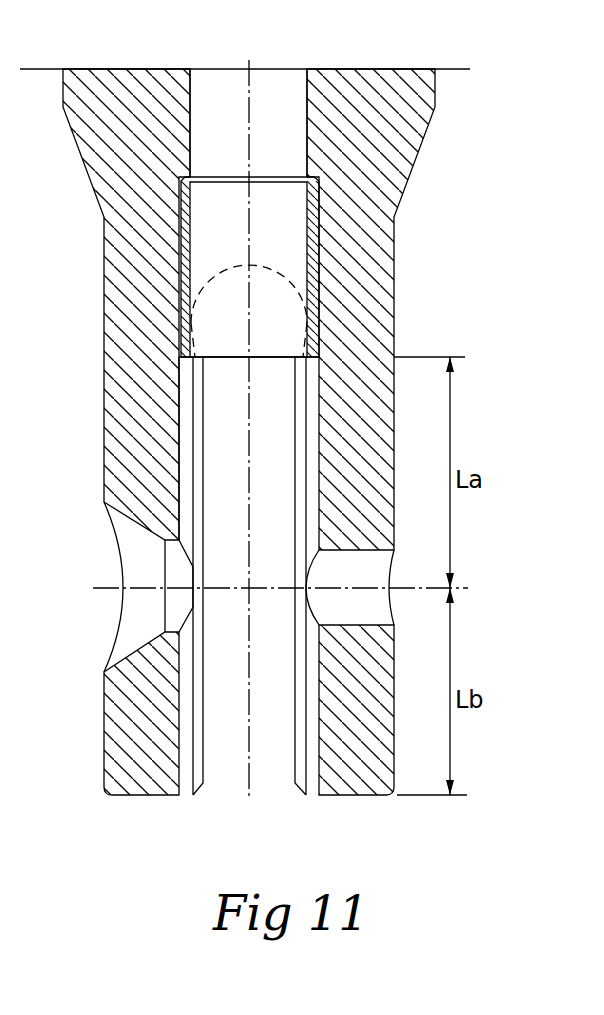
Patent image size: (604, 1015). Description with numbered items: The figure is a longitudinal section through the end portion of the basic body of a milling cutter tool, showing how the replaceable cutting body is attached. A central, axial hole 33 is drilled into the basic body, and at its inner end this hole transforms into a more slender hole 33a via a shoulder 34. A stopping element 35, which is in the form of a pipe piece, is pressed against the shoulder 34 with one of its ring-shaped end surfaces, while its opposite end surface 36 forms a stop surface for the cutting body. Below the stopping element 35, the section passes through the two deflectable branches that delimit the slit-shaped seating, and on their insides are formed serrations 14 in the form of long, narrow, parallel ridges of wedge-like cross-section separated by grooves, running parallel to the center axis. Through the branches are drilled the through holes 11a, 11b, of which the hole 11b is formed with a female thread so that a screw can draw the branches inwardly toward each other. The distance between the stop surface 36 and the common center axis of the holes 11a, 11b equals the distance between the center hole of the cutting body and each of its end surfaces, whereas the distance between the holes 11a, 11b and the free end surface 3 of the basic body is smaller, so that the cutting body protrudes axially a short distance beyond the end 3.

The end 3 is at (148, 797).
The through hole 11a is at (133, 630).
The through hole 11b is at (380, 607).
The serrations 14 is at (205, 447).
The central axial hole 33 is at (185, 442).
The slender hole 33a is at (191, 111).
The shoulder 34 is at (184, 181).
The stopping element 35 is at (240, 235).
The end surface 36 is at (186, 358).